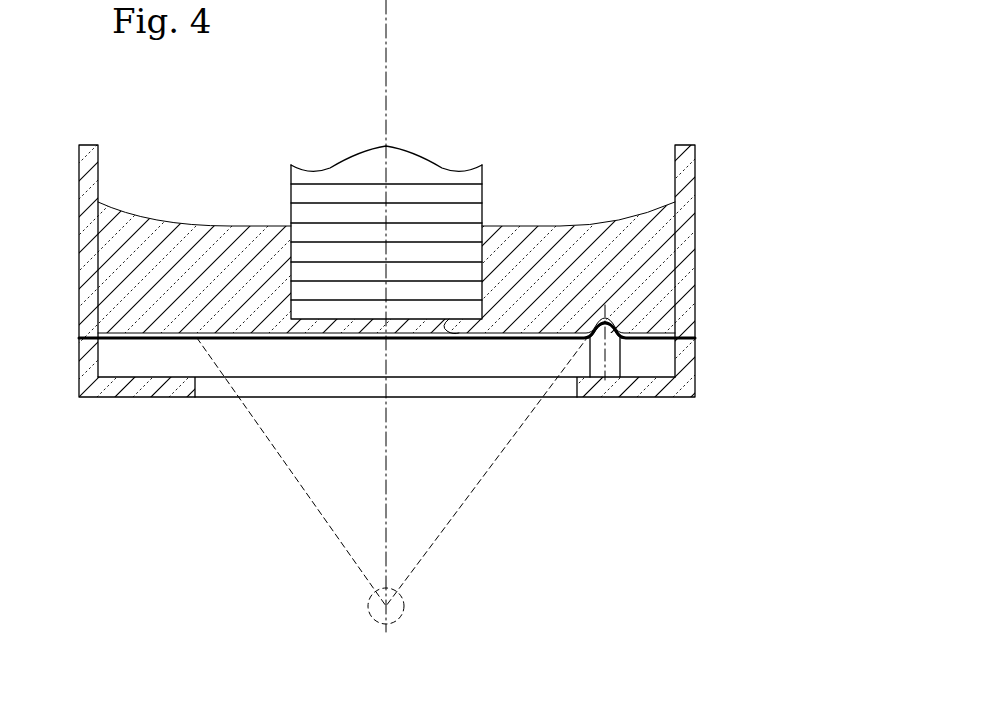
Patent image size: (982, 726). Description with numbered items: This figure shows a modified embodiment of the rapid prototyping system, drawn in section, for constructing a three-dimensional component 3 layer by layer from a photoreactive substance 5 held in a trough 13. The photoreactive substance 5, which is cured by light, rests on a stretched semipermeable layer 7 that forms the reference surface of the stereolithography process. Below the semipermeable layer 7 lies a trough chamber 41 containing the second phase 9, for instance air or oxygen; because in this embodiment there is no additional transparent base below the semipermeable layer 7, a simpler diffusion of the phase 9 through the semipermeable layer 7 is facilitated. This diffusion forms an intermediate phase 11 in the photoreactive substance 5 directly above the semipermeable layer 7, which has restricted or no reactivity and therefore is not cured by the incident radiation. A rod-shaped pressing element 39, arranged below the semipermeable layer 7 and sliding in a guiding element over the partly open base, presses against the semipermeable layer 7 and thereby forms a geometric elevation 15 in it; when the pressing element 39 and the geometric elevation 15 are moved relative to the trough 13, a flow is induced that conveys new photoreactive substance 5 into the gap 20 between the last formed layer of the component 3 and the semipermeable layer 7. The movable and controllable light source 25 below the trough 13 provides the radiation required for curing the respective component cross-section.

The three-dimensional component 3 is at (501, 151).
The photoreactive substance 5 is at (224, 272).
The semipermeable layer 7 is at (657, 333).
The second phase 9 is at (287, 350).
The intermediate phase 11 is at (137, 335).
The trough 13 is at (716, 139).
The geometric elevation 15 is at (606, 325).
The gap 20 is at (330, 328).
The light source 25 is at (400, 597).
The pressing element 39 is at (612, 363).
The trough chamber 41 is at (144, 369).